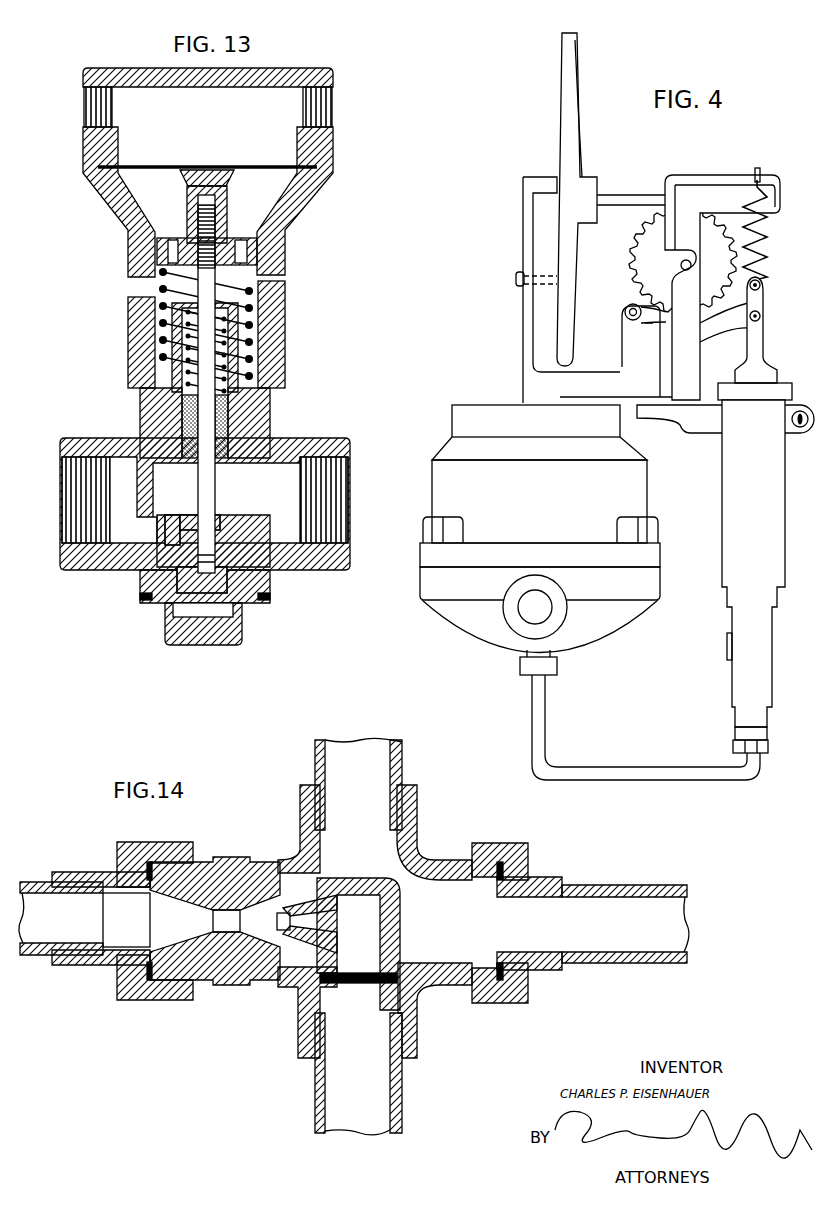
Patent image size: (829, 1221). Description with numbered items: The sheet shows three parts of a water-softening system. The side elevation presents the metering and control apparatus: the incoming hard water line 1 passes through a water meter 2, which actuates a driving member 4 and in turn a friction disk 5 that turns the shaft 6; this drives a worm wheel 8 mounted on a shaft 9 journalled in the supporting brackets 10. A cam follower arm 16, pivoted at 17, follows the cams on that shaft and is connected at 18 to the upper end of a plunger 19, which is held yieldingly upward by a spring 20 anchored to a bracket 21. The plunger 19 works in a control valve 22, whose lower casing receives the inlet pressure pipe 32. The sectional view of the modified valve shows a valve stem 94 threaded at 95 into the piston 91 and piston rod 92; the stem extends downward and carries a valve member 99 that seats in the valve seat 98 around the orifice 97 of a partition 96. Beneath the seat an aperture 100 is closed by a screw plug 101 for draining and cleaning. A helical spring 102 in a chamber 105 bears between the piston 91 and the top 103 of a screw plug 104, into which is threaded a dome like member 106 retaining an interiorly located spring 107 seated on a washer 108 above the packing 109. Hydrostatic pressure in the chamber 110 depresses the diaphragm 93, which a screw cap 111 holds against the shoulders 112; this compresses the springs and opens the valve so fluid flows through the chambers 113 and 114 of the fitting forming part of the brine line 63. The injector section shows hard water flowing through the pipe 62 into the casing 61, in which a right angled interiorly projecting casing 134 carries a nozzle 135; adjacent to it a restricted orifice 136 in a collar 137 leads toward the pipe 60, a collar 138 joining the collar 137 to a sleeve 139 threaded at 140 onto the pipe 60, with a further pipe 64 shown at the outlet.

In FIG. 4, the incoming hard water line 1 is at (530, 617).
In FIG. 4, the water meter 2 is at (652, 480).
In FIG. 4, the driving member 4 is at (516, 278).
In FIG. 4, the friction disk 5 is at (563, 104).
In FIG. 4, the shaft 6 is at (621, 196).
In FIG. 4, the worm wheel 8 is at (648, 241).
In FIG. 4, the shaft 9 is at (686, 259).
In FIG. 4, the supporting brackets 10 is at (659, 348).
In FIG. 4, the cam follower arm 16 is at (716, 330).
In FIG. 4, the pivot 17 is at (626, 309).
In FIG. 4, the connection 18 is at (760, 317).
In FIG. 4, the plunger 19 is at (765, 294).
In FIG. 4, the spring 20 is at (768, 248).
In FIG. 4, the bracket 21 is at (777, 181).
In FIG. 4, the control valve 22 is at (783, 476).
In FIG. 4, the inlet pressure pipe 32 is at (690, 790).
In FIG. 14, the pipe 60 is at (38, 880).
In FIG. 14, the casing 61 is at (300, 852).
In FIG. 14, the pipe 62 is at (313, 1113).
In FIG. 14, the brine line 63 is at (405, 760).
In FIG. 14, the pipe 64 is at (625, 885).
In FIG. 13, the piston 91 is at (258, 260).
In FIG. 13, the piston rod 92 is at (228, 197).
In FIG. 13, the diaphragm 93 is at (255, 166).
In FIG. 13, the valve stem 94 is at (216, 281).
In FIG. 13, the threaded connection 95 is at (260, 250).
In FIG. 13, the partition 96 is at (265, 520).
In FIG. 13, the orifice 97 is at (220, 518).
In FIG. 13, the valve seat 98 is at (178, 520).
In FIG. 13, the valve member 99 is at (215, 593).
In FIG. 13, the aperture 100 is at (272, 582).
In FIG. 13, the screw plug 101 is at (238, 641).
In FIG. 13, the helical spring 102 is at (254, 341).
In FIG. 13, the top of screw plug 103 is at (284, 368).
In FIG. 13, the screw plug 104 is at (271, 419).
In FIG. 13, the chamber 105 is at (252, 296).
In FIG. 13, the dome like member 106 is at (140, 368).
In FIG. 13, the interiorly located spring 107 is at (262, 324).
In FIG. 13, the washer 108 is at (270, 402).
In FIG. 13, the packing 109 is at (183, 425).
In FIG. 13, the chamber 110 is at (130, 138).
In FIG. 13, the screw cap 111 is at (330, 80).
In FIG. 13, the shoulders 112 is at (330, 193).
In FIG. 13, the chamber 113 is at (122, 535).
In FIG. 13, the chamber 114 is at (292, 478).
In FIG. 14, the interiorly projecting casing 134 is at (400, 908).
In FIG. 14, the nozzle 135 is at (328, 913).
In FIG. 14, the restricted orifice 136 is at (227, 933).
In FIG. 14, the collar 137 is at (250, 985).
In FIG. 14, the collar 138 is at (160, 842).
In FIG. 14, the sleeve 139 is at (90, 871).
In FIG. 14, the threaded connection 140 is at (83, 963).